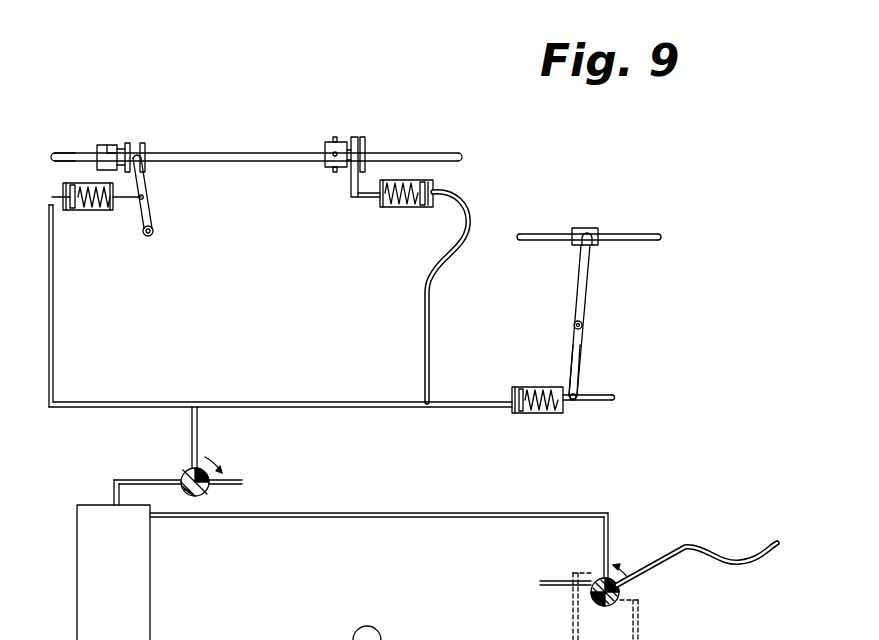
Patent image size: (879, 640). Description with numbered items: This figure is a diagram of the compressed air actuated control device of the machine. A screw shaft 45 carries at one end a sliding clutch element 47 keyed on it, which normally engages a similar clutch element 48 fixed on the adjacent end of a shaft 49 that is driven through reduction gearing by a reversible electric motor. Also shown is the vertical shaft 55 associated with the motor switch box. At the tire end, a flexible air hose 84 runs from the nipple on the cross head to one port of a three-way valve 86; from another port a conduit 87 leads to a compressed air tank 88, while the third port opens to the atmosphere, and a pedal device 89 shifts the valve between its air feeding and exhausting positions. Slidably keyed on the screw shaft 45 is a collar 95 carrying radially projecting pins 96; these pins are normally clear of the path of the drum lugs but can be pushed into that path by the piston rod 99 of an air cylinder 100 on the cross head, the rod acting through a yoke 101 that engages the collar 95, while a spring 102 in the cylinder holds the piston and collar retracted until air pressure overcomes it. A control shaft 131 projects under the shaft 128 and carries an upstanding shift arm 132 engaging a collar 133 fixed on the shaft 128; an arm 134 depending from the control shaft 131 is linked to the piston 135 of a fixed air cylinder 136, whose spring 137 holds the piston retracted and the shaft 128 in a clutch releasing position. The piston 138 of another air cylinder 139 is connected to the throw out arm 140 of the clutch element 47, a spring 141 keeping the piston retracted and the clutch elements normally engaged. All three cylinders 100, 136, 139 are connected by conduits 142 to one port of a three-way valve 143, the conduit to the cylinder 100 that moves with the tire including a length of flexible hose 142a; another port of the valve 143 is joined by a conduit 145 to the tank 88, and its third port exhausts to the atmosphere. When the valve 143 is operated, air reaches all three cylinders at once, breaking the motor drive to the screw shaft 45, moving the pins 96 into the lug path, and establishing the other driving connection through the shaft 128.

The screw shaft 45 is at (183, 152).
The sliding clutch element 47 is at (119, 143).
The clutch element 48 is at (100, 145).
The shaft 49 is at (62, 152).
The vertical shaft 55 is at (405, 639).
The flexible air hose 84 is at (737, 563).
The three-way valve 86 is at (603, 607).
The conduit 87 is at (375, 513).
The compressed air tank 88 is at (140, 603).
The pedal device 89 is at (642, 630).
The collar 95 is at (349, 145).
The pins 96 is at (335, 140).
The piston rod 99 is at (367, 199).
The air cylinder 100 is at (400, 208).
The yoke 101 is at (352, 185).
The spring 102 is at (420, 182).
The shaft 128 is at (642, 235).
The control shaft 131 is at (583, 325).
The shift arm 132 is at (585, 275).
The collar 133 is at (593, 233).
The arm 134 is at (575, 360).
The piston 135 is at (518, 413).
The fixed air cylinder 136 is at (528, 386).
The spring 137 is at (542, 413).
The piston 138 is at (70, 210).
The air cylinder 139 is at (90, 210).
The throw out arm 140 is at (149, 208).
The spring 141 is at (97, 203).
The conduits 142 is at (53, 348).
The flexible hose 142a is at (467, 214).
The three-way valve 143 is at (186, 474).
The conduit 145 is at (125, 480).